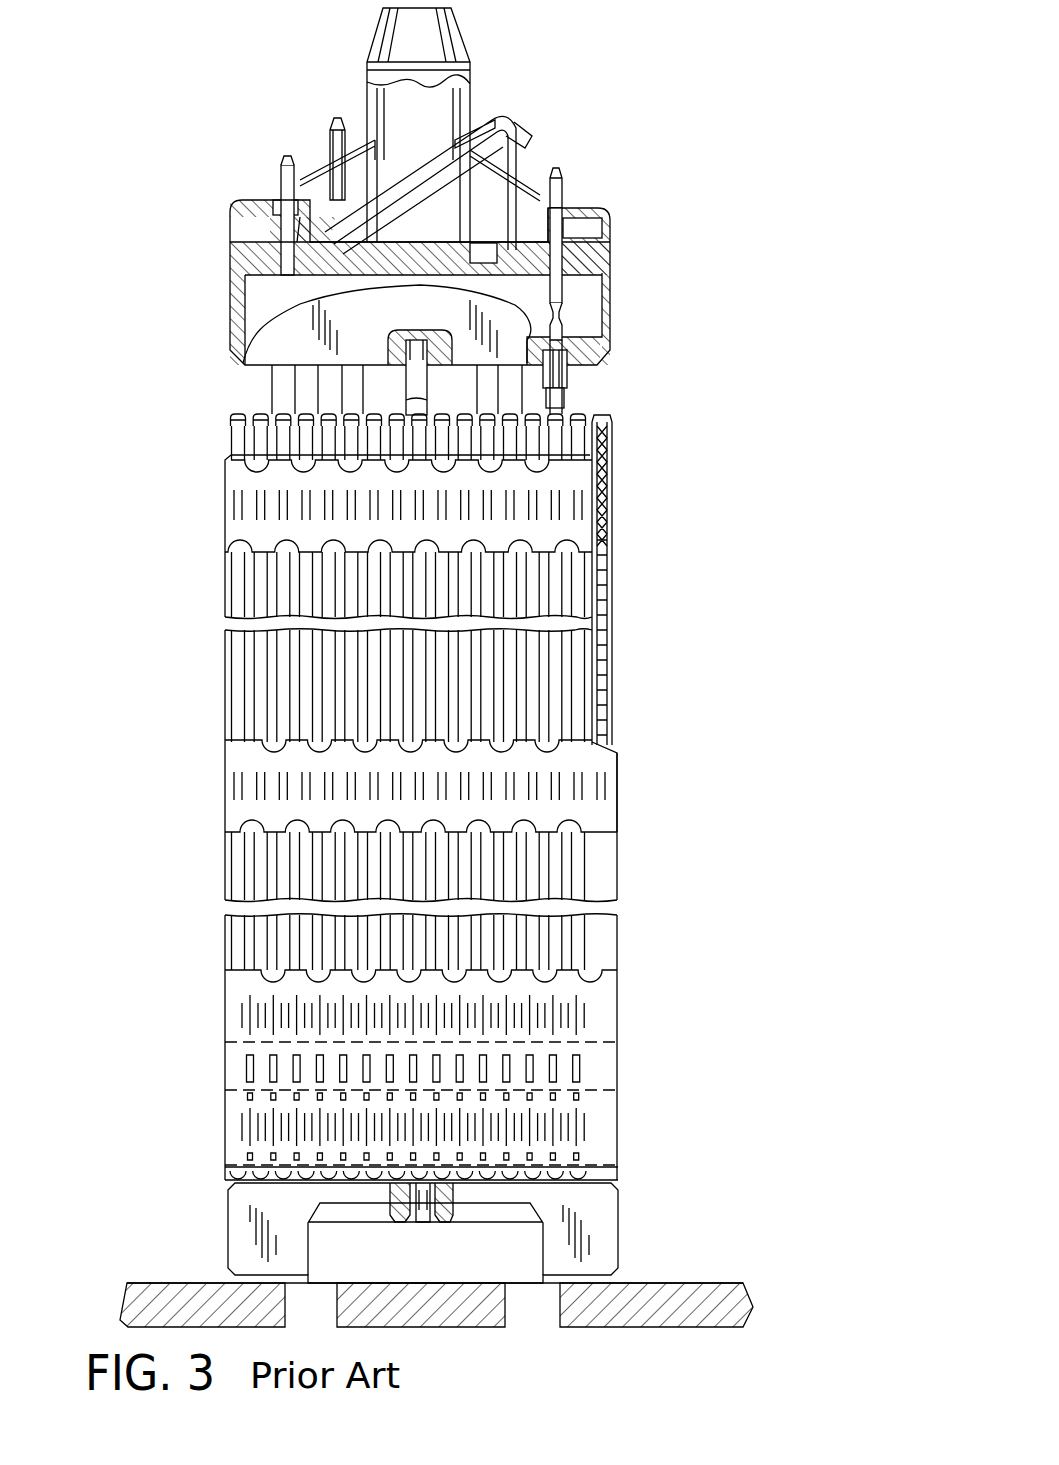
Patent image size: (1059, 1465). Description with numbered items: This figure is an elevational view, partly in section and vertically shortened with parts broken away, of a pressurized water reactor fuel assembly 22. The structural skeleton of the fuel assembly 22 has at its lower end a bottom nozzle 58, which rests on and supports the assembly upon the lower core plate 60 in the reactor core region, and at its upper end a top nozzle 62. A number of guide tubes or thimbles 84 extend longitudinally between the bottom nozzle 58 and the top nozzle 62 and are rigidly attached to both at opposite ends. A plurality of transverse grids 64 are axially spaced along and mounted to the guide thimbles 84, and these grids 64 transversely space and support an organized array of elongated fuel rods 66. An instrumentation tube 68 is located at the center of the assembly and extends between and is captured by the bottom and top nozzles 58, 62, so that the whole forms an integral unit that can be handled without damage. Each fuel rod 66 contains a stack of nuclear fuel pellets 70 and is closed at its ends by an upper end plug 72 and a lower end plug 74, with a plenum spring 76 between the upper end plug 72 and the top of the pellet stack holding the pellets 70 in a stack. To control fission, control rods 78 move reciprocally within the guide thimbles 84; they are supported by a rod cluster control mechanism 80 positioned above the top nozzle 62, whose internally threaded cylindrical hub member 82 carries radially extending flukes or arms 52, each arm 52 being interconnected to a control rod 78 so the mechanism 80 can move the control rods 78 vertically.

The fuel assembly 22 is at (698, 275).
The radially extending flukes or arms 52 is at (363, 137).
The bottom nozzle 58 is at (624, 1226).
The lower core plate 60 is at (663, 1283).
The top nozzle 62 is at (612, 258).
The transverse grids 64 is at (226, 517).
The fuel rods 66 is at (228, 694).
The instrumentation tube 68 is at (432, 1205).
The nuclear fuel pellets 70 is at (608, 588).
The upper end plug 72 is at (610, 423).
The lower end plug 74 is at (525, 1183).
The plenum spring 76 is at (613, 490).
The control rods 78 is at (582, 325).
The rod cluster control mechanism 80 is at (520, 117).
The internally threaded cylindrical hub member 82 is at (471, 104).
The guide tubes or thimbles 84 is at (270, 400).